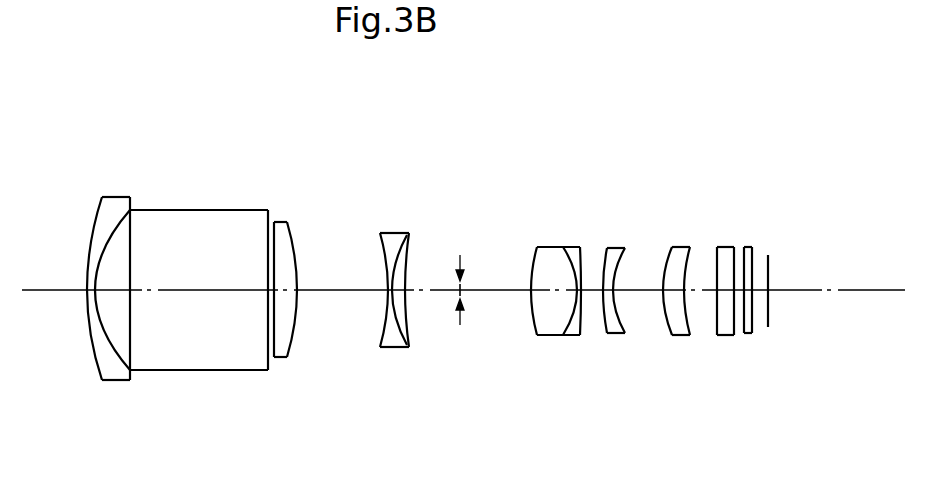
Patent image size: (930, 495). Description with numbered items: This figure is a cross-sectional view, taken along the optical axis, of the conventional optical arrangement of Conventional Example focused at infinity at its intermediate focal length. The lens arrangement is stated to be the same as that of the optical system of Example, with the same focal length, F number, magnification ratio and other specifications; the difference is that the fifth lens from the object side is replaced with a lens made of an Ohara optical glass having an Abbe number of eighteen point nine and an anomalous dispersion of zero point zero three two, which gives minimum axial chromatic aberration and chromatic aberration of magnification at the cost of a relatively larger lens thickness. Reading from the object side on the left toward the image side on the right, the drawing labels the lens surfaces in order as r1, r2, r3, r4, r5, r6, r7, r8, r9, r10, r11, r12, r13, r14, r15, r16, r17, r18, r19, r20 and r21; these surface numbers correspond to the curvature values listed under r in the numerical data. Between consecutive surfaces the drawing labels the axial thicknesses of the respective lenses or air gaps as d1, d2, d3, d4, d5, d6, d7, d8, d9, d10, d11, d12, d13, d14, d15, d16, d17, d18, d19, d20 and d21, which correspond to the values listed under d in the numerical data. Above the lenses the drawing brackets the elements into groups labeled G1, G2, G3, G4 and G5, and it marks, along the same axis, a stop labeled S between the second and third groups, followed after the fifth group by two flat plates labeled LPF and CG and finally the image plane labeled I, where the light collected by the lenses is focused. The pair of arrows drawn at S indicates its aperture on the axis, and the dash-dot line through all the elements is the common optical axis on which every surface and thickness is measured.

The first lens surface r1 is at (97, 212).
The second lens surface r2 is at (122, 216).
The third lens surface r3 is at (137, 218).
The fourth lens surface r4 is at (268, 224).
The fifth lens surface r5 is at (276, 222).
The sixth lens surface r6 is at (298, 253).
The seventh lens surface r7 is at (378, 240).
The eighth lens surface r8 is at (393, 240).
The ninth lens surface r9 is at (410, 235).
The tenth surface r10 is at (459, 252).
The eleventh lens surface r11 is at (526, 258).
The twelfth lens surface r12 is at (556, 255).
The thirteenth lens surface r13 is at (586, 262).
The fourteenth lens surface r14 is at (600, 270).
The fifteenth lens surface r15 is at (622, 262).
The sixteenth lens surface r16 is at (655, 260).
The seventeenth lens surface r17 is at (678, 256).
The eighteenth surface r18 is at (711, 255).
The nineteenth surface r19 is at (723, 255).
The twentieth surface r20 is at (752, 255).
The twenty-first surface r21 is at (763, 255).
The first axial thickness d1 is at (90, 296).
The second axial thickness d2 is at (115, 296).
The third axial thickness d3 is at (190, 296).
The fourth axial thickness d4 is at (270, 300).
The fifth axial thickness d5 is at (284, 296).
The sixth axial thickness d6 is at (337, 296).
The seventh axial thickness d7 is at (390, 348).
The eighth axial thickness d8 is at (406, 348).
The ninth axial thickness d9 is at (432, 296).
The tenth axial thickness d10 is at (493, 296).
The eleventh axial thickness d11 is at (548, 337).
The twelfth axial thickness d12 is at (577, 296).
The thirteenth axial thickness d13 is at (595, 337).
The fourteenth axial thickness d14 is at (628, 336).
The fifteenth axial thickness d15 is at (645, 296).
The sixteenth axial thickness d16 is at (677, 337).
The seventeenth axial thickness d17 is at (703, 296).
The eighteenth axial thickness d18 is at (727, 337).
The nineteenth axial thickness d19 is at (745, 337).
The twentieth axial thickness d20 is at (757, 296).
The twenty-first axial thickness d21 is at (775, 330).
The first lens group G1 is at (191, 230).
The second lens group G2 is at (389, 214).
The third lens group G3 is at (538, 208).
The fourth lens group G4 is at (615, 207).
The fifth lens group G5 is at (673, 208).
The aperture stop S is at (458, 203).
The low-pass filter LPF is at (724, 208).
The cover glass CG is at (767, 207).
The image plane I is at (772, 258).